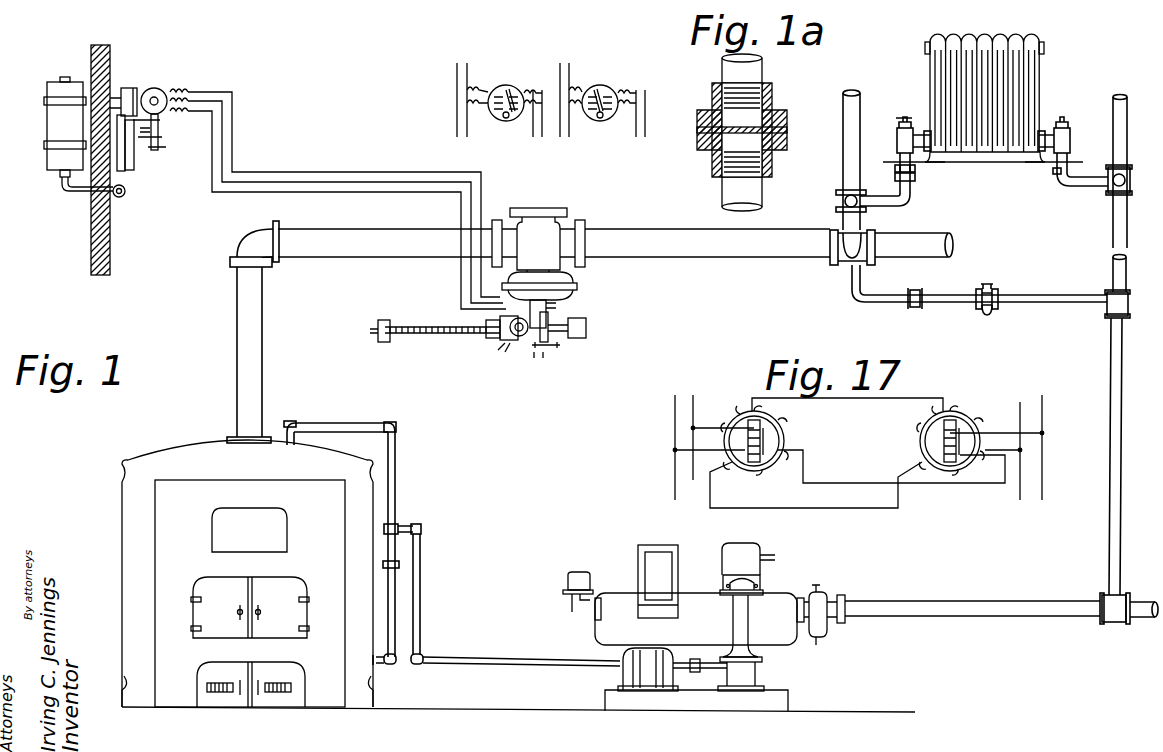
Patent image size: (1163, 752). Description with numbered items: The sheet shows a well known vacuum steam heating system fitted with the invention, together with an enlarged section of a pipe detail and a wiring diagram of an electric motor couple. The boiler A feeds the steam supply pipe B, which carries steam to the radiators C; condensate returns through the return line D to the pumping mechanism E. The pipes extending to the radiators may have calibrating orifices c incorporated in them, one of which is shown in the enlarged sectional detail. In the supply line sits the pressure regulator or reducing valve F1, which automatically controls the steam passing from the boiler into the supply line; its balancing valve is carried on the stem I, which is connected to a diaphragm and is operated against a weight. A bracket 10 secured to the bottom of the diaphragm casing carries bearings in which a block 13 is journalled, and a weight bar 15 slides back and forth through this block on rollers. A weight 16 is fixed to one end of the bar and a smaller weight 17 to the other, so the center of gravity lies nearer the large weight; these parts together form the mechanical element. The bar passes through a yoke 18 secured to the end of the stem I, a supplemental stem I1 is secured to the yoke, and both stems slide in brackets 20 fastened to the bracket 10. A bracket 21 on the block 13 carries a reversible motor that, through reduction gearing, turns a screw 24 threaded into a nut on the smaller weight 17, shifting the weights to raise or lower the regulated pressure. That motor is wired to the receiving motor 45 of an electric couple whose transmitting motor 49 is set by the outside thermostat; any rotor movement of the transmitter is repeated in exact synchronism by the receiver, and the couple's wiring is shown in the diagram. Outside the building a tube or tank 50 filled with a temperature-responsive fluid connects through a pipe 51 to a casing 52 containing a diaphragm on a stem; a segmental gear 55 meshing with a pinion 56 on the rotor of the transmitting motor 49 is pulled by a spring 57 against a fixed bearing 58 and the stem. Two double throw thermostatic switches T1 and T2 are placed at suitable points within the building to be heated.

In FIG. 1, the bracket 10 is at (510, 345).
In FIG. 1, the block 13 is at (488, 323).
In FIG. 1, the weight bar 15 is at (442, 318).
In FIG. 1, the weight 16 is at (586, 328).
In FIG. 1, the smaller weight 17 is at (383, 342).
In FIG. 1, the yoke 18 is at (552, 326).
In FIG. 1, the brackets 20 is at (550, 351).
In FIG. 1, the bracket 21 is at (486, 336).
In FIG. 1, the screw 24 is at (425, 334).
In FIG. 17, the receiving motor 45 is at (980, 440).
In FIG. 1, the transmitting motor 49 is at (156, 88).
In FIG. 17, the transmitting motor 49 is at (730, 455).
In FIG. 1, the tube or tank 50 is at (47, 128).
In FIG. 1, the pipe 51 is at (64, 178).
In FIG. 1, the casing 52 is at (127, 172).
In FIG. 1, the segmental gear 55 is at (160, 112).
In FIG. 1, the pinion 56 is at (163, 95).
In FIG. 1, the spring 57 is at (160, 146).
In FIG. 1, the fixed bearing 58 is at (145, 124).
In FIG. 1, the boiler A is at (140, 491).
In FIG. 1, the steam supply pipe B is at (400, 250).
In FIG. 1, the radiators C is at (1032, 90).
In FIG. 1, the return line D is at (1113, 228).
In FIG. 1, the pumping mechanism E is at (630, 550).
In FIG. 1, the pressure regulator or reducing valve F1 is at (600, 270).
In FIG. 1, the stem I is at (552, 309).
In FIG. 1, the supplemental stem I1 is at (532, 364).
In FIG. 1, the double throw thermostatic switch T1 is at (499, 98).
In FIG. 1, the double throw thermostatic switch T2 is at (602, 98).
In FIG. 1A, the calibrating orifice c is at (742, 132).